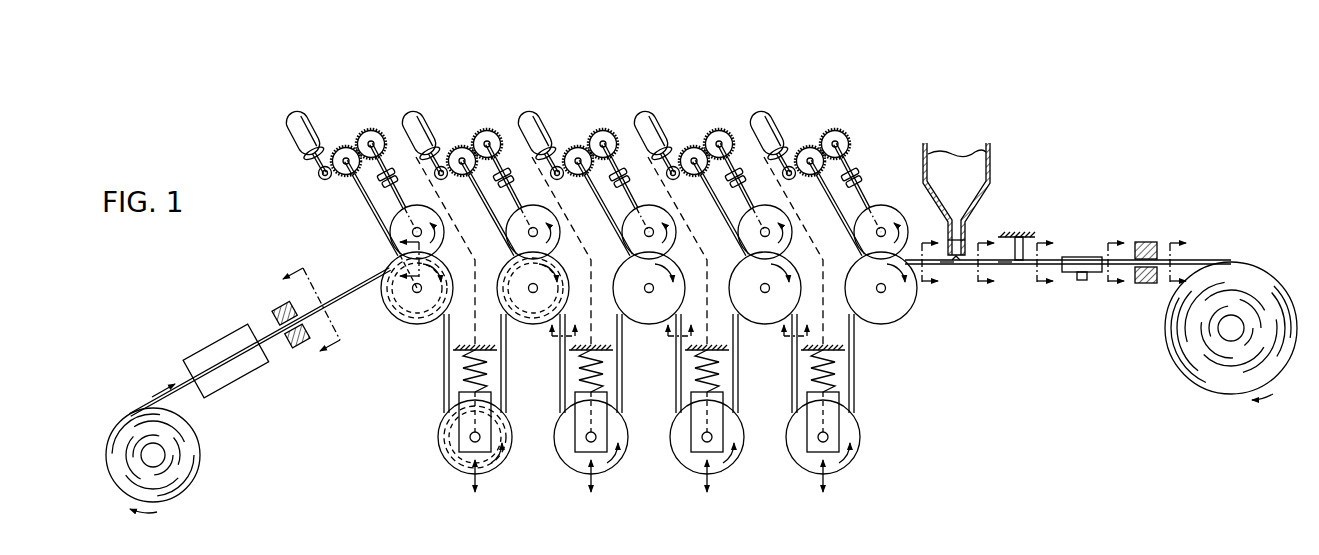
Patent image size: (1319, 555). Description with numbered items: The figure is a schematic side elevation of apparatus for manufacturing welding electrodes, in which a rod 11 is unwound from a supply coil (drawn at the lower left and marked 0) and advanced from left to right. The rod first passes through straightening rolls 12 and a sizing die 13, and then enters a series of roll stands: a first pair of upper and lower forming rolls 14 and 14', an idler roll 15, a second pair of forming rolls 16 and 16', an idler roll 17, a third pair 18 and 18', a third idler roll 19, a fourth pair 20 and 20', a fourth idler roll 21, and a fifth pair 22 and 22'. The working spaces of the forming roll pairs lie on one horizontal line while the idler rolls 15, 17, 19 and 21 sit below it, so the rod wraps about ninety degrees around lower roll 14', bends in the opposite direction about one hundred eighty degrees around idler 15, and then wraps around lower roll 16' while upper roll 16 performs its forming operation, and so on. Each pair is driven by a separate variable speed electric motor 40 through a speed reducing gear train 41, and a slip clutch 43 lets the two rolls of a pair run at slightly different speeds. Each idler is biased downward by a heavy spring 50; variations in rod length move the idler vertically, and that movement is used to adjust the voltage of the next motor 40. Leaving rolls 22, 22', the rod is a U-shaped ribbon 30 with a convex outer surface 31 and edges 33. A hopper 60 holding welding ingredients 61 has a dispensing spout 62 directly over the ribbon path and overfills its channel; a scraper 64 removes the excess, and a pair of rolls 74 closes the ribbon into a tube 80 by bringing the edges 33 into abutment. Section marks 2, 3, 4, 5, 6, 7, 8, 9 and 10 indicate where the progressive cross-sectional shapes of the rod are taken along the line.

The supply coil of strip 0 is at (110, 430).
The rod 11 is at (140, 406).
The straightening rolls 12 is at (184, 365).
The sizing die 13 is at (287, 352).
The upper forming roll 14 is at (384, 225).
The lower forming roll 14' is at (413, 304).
The idler roll 15 is at (453, 467).
The upper forming roll 16 is at (511, 232).
The lower forming roll 16' is at (533, 320).
The idler roll 17 is at (597, 470).
The upper forming roll 18 is at (673, 232).
The lower forming roll 18' is at (649, 320).
The idler roll 19 is at (714, 470).
The upper former roll 20 is at (787, 232).
The lower former roll 20' is at (765, 320).
The idler roll 21 is at (828, 473).
The upper forming roll 22 is at (881, 194).
The lower forming roll 22' is at (882, 316).
The U-shaped ribbon 30 is at (947, 268).
The outer, lower and convex surface 31 is at (1005, 267).
The edges 33 is at (961, 267).
The variable speed electric motor 40 is at (297, 115).
The speed reducing gear trains 41 is at (328, 123).
The slip clutch 43 is at (387, 176).
The springs 50 is at (463, 373).
The hopper 60 is at (917, 165).
The welding ingredients 61 is at (978, 170).
The dispensing spout 62 is at (948, 233).
The scraper 64 is at (1013, 236).
The pair of rolls 74 is at (1072, 274).
The tube 80 is at (1129, 257).
The section line 2- 2 is at (298, 327).
The section line 3- 3 is at (389, 275).
The section line 4- 4 is at (564, 341).
The section line 5- 5 is at (685, 341).
The section line 6- 6 is at (800, 342).
The section line 7- 7 is at (924, 262).
The section line 8- 8 is at (984, 264).
The section line 9- 9 is at (1047, 264).
The section line 10- 10 is at (1109, 264).